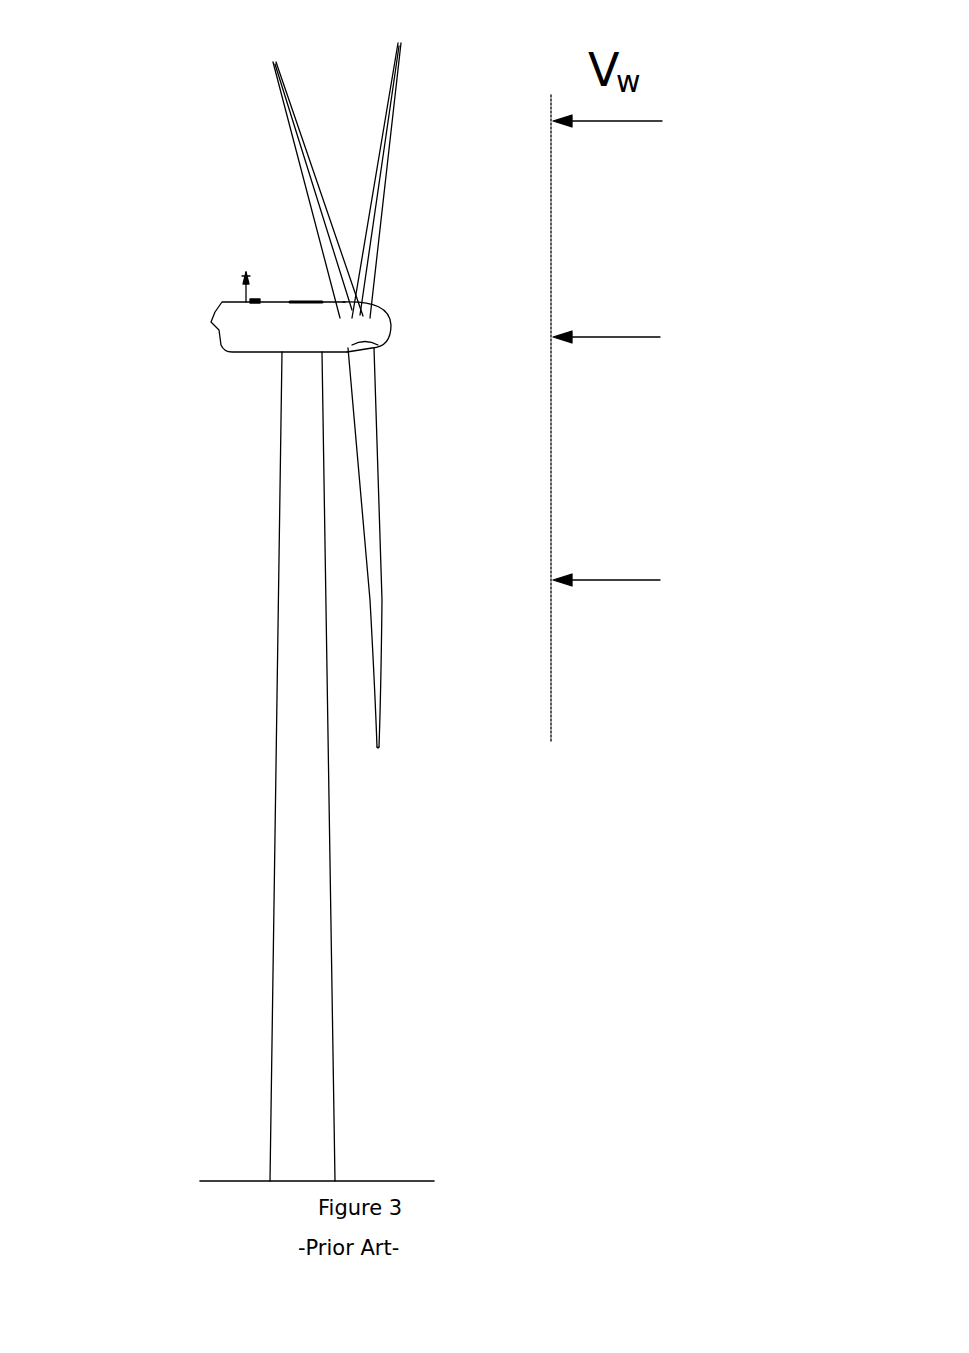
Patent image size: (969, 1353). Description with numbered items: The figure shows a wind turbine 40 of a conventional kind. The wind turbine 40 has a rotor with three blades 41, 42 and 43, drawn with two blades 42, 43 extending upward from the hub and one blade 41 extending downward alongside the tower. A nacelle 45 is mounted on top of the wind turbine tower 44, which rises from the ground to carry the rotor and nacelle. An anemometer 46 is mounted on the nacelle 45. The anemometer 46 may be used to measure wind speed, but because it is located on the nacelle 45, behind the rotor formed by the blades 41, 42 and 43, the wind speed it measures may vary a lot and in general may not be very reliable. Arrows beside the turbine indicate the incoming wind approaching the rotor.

The wind turbine 40 is at (267, 612).
The blade 41 is at (362, 392).
The blade 42 is at (381, 210).
The blade 43 is at (314, 210).
The wind turbine tower 44 is at (307, 742).
The nacelle 45 is at (272, 349).
The anemometer 46 is at (222, 283).